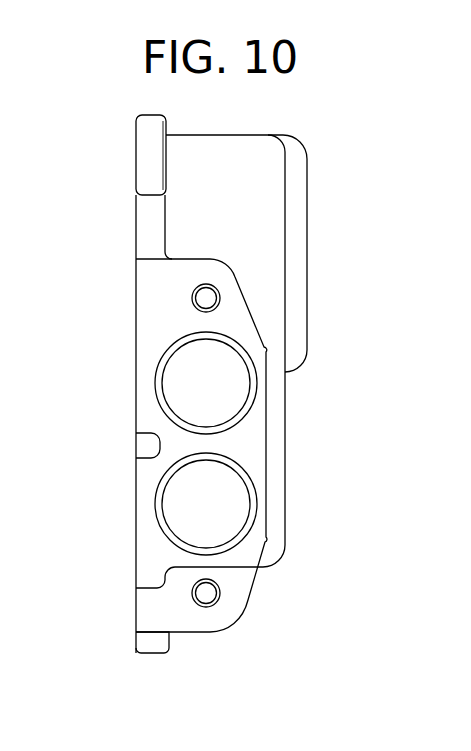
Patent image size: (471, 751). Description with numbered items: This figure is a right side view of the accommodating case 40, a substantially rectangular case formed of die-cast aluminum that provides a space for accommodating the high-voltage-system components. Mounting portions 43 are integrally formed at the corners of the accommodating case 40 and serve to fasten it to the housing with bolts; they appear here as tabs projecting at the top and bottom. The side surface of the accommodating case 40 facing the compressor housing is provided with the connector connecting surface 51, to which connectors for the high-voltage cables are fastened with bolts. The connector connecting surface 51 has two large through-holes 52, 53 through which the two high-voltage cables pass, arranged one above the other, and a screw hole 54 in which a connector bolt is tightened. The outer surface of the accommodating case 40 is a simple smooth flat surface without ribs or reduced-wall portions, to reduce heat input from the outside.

The accommodating case 40 is at (305, 262).
The mounting portion 43 is at (148, 156).
The connector connecting surface 51 is at (158, 333).
The through-hole 52 is at (224, 397).
The through-hole 53 is at (225, 508).
The screw hole 54 is at (208, 592).